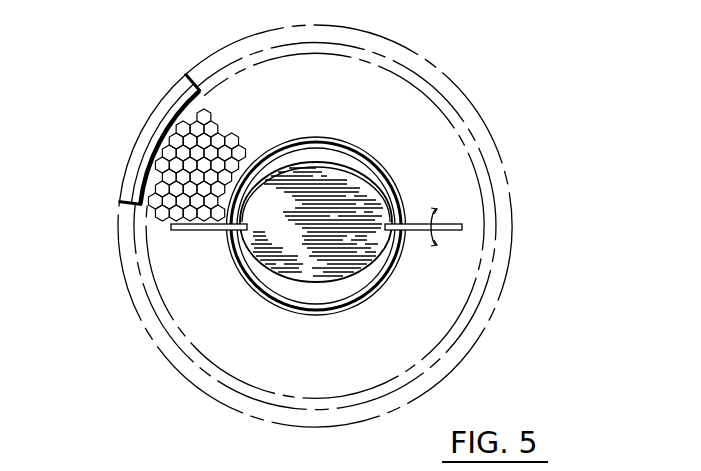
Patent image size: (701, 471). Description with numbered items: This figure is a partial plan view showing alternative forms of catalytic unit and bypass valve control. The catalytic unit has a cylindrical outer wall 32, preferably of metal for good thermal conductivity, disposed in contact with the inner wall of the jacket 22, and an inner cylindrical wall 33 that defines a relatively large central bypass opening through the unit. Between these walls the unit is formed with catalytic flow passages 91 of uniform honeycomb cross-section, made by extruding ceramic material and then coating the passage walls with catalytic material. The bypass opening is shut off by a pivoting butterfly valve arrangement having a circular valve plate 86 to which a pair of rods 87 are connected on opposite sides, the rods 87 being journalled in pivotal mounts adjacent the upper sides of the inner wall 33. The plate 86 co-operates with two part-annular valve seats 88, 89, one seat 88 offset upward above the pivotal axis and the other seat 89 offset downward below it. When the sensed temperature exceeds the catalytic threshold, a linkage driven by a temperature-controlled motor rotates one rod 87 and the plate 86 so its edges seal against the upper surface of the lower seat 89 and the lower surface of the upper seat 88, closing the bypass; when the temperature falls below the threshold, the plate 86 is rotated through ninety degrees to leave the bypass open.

The jacket 22 is at (148, 132).
The cylindrical outer wall 32 is at (180, 113).
The catalytic flow passages 91 is at (178, 190).
The inner cylindrical wall 33 is at (361, 148).
The valve seat 89 is at (318, 142).
The valve seat 88 is at (351, 299).
The circular valve plate 86 is at (364, 192).
The rods 87 is at (424, 222).